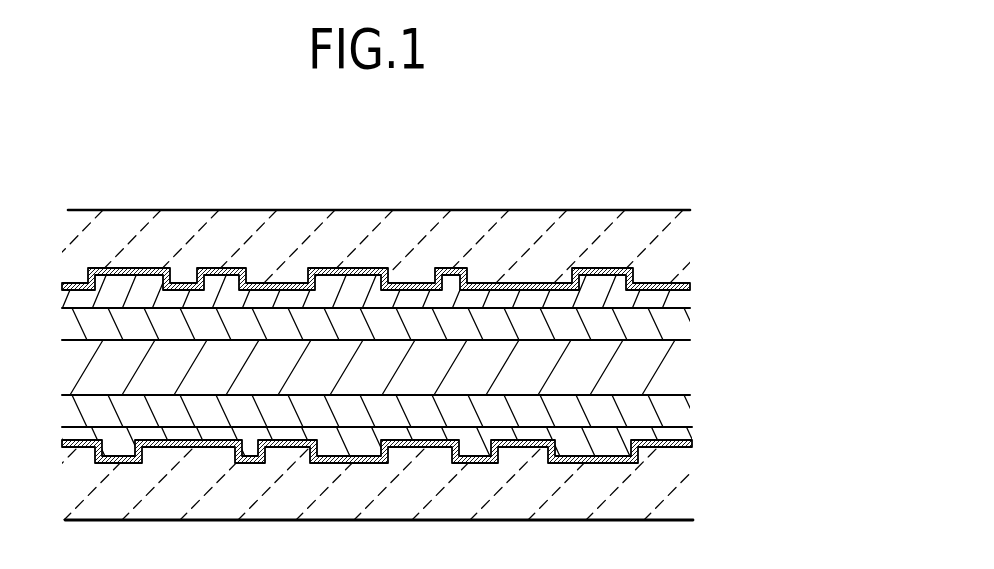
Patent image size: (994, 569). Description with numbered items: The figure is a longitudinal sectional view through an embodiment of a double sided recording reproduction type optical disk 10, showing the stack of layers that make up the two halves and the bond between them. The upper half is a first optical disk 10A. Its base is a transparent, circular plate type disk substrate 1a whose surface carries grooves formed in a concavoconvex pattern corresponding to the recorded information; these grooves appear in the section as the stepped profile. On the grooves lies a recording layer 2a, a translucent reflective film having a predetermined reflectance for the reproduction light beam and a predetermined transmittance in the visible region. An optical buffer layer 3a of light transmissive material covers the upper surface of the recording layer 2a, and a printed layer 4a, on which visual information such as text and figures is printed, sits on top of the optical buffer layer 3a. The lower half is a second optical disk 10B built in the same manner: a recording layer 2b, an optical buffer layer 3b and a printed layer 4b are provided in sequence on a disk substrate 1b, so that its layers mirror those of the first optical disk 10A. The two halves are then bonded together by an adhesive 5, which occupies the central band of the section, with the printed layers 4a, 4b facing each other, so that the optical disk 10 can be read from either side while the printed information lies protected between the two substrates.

The optical disk 10 is at (575, 193).
The first optical disk 10A is at (808, 170).
The second optical disk 10B is at (808, 370).
The disk substrate 1a is at (681, 230).
The recording layer 2a is at (681, 284).
The optical buffer layer 3a is at (681, 297).
The printed layer 4a is at (685, 322).
The adhesive 5 is at (107, 365).
The printed layer 4b is at (681, 412).
The optical buffer layer 3b is at (681, 428).
The recording layer 2b is at (683, 438).
The disk substrate 1b is at (683, 466).